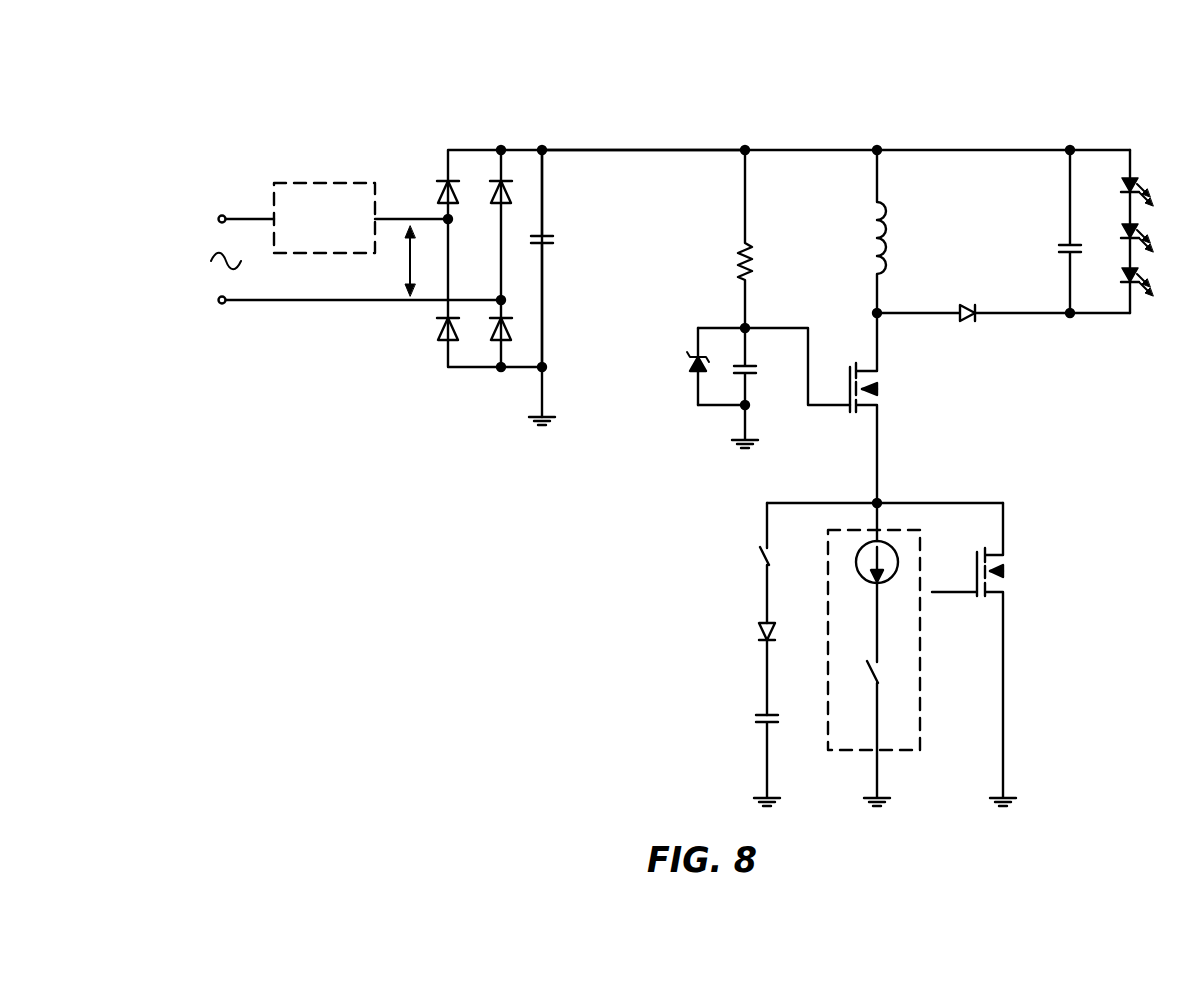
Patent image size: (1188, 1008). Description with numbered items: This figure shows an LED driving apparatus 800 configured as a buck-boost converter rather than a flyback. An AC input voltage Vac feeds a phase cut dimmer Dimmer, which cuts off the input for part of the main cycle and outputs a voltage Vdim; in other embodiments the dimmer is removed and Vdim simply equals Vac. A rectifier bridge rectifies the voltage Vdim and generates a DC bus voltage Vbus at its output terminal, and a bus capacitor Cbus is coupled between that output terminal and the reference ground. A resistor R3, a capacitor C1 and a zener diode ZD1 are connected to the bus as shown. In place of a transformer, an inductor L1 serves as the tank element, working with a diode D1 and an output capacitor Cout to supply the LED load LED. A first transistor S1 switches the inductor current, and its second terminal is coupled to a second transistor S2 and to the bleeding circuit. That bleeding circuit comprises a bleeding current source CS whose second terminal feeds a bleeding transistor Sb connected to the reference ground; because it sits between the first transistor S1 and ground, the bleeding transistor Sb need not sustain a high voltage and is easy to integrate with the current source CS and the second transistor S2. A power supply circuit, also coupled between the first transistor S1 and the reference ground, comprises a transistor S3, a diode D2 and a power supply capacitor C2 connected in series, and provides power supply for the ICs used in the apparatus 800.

The LED driving apparatus 800 is at (1094, 88).
The AC input voltage Vac is at (335, 260).
The phase cut dimmer Dimmer is at (361, 218).
The voltage output by the phase cut dimmer Vdim is at (408, 261).
The DC bus voltage Vbus is at (643, 136).
The bus capacitor Cbus is at (559, 258).
The resistor R3 is at (761, 239).
The capacitor C1 is at (759, 366).
The zener diode ZD1 is at (683, 366).
The inductor L1 is at (902, 231).
The diode D1 is at (1003, 332).
The output capacitor Cout is at (1047, 231).
The LED load LED is at (1137, 231).
The first transistor S1 is at (882, 408).
The transistor S3 is at (748, 563).
The diode D2 is at (751, 669).
The power supply capacitor C2 is at (752, 759).
The bleeding current source CS is at (874, 626).
The bleeding transistor Sb is at (884, 694).
The second transistor S2 is at (987, 654).